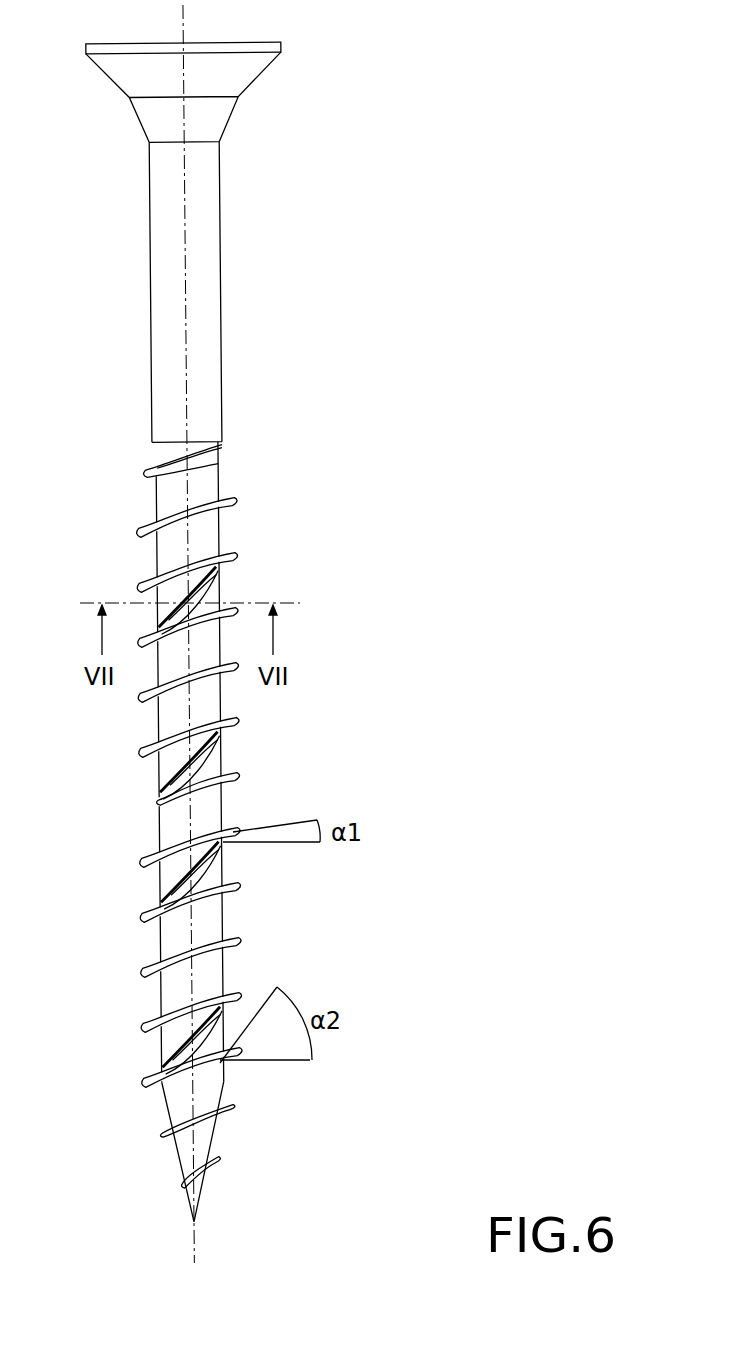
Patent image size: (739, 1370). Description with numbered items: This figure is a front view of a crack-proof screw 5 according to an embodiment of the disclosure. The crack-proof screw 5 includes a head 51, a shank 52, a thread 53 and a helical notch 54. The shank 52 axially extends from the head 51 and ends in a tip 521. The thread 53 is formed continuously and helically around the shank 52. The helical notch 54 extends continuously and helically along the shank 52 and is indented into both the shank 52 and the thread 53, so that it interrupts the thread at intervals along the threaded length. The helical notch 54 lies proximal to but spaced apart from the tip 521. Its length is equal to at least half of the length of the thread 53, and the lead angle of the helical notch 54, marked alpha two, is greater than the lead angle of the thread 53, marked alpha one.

The crack-proof screw 5 is at (238, 633).
The head 51 is at (248, 72).
The shank 52 is at (162, 243).
The tip 521 is at (193, 1224).
The thread 53 is at (221, 491).
The helical notch 54 is at (217, 902).